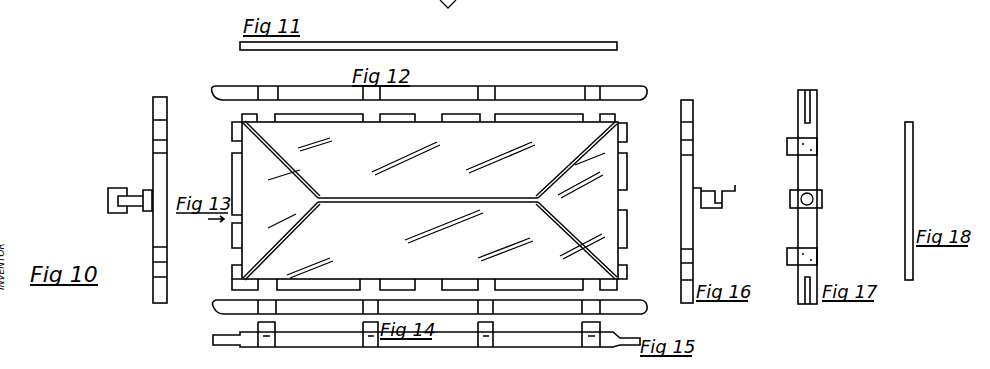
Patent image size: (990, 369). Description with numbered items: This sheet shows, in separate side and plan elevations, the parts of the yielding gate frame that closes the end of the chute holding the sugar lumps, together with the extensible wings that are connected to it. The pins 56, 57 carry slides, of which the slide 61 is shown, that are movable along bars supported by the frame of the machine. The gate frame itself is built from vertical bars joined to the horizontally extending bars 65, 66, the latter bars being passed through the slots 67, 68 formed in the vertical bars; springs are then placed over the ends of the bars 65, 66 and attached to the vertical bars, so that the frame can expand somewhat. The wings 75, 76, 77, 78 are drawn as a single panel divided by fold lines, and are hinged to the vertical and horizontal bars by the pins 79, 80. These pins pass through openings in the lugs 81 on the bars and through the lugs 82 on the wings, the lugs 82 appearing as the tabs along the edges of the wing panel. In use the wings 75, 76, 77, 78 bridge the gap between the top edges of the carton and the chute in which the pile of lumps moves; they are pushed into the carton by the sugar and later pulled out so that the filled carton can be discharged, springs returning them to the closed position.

In FIG. 13, the pin 56 is at (137, 190).
In FIG. 16, the pin 57 is at (709, 203).
In FIG. 17, the pin 57 is at (822, 197).
In FIG. 17, the slide 61 is at (806, 190).
In FIG. 12, the horizontally extending bar 65 is at (544, 92).
In FIG. 14, the horizontally extending bar 65 is at (429, 307).
In FIG. 15, the horizontally extending bar 66 is at (233, 337).
In FIG. 17, the slot 67 is at (815, 112).
In FIG. 17, the slot 68 is at (803, 298).
In FIG. 10, the wing 75 is at (306, 180).
In FIG. 10, the wing 76 is at (449, 179).
In FIG. 10, the wing 77 is at (598, 235).
In FIG. 10, the wing 78 is at (413, 241).
In FIG. 18, the pin 79 is at (913, 153).
In FIG. 11, the pin 80 is at (546, 43).
In FIG. 12, the lug 81 is at (491, 89).
In FIG. 13, the lug 81 is at (168, 146).
In FIG. 10, the lug 82 is at (548, 120).